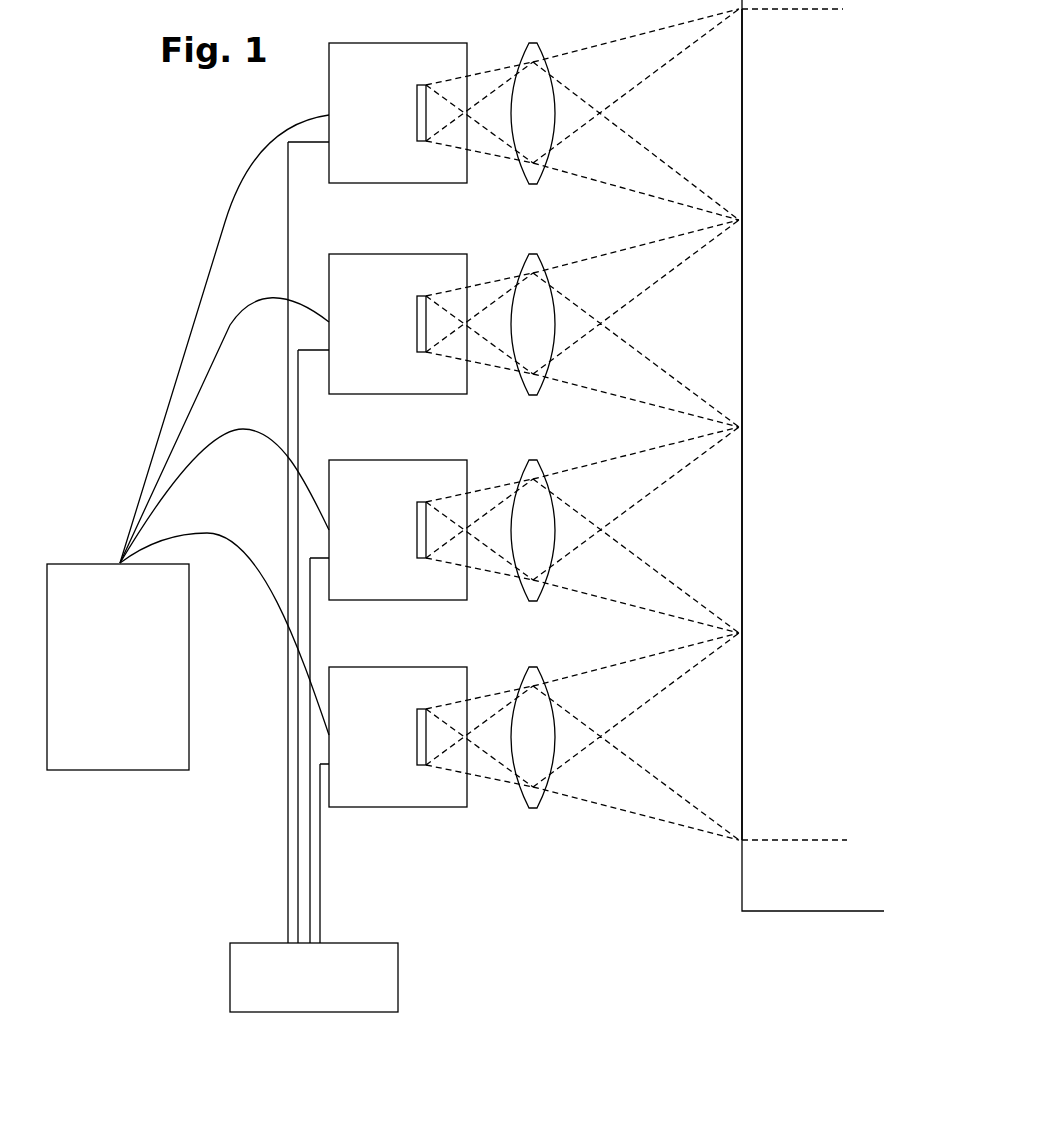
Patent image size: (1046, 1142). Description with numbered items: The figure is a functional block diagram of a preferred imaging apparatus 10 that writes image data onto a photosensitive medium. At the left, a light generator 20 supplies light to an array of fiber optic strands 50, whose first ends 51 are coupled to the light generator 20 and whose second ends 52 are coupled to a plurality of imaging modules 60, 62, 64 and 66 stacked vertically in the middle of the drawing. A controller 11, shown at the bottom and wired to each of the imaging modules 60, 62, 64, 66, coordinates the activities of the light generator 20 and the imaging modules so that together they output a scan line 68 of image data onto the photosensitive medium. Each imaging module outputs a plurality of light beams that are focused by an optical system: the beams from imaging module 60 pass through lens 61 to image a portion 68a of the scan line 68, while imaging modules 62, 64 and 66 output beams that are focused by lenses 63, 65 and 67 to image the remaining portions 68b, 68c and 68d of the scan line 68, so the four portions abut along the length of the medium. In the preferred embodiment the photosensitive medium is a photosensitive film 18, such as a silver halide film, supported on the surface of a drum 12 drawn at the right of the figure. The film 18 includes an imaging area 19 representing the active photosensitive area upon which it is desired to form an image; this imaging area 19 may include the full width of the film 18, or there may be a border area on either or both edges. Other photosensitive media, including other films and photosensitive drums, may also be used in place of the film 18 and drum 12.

The imaging apparatus 10 is at (172, 150).
The controller 11 is at (398, 944).
The drum 12 is at (800, 912).
The photosensitive film 18 is at (742, 877).
The imaging area 19 is at (814, 790).
The light generator 20 is at (56, 770).
The fiber optic strands 50 is at (224, 226).
The first ends 51 is at (120, 563).
The second ends 52 is at (329, 113).
The imaging module 60 is at (329, 184).
The lens 61 is at (533, 185).
The imaging module 62 is at (329, 395).
The lens 63 is at (533, 396).
The imaging module 64 is at (329, 601).
The lens 65 is at (533, 602).
The imaging module 66 is at (329, 808).
The lens 67 is at (533, 809).
The scan line 68 is at (744, 40).
The portion of scan line 68a is at (742, 103).
The portion of scan line 68b is at (742, 313).
The portion of scan line 68c is at (742, 525).
The portion of scan line 68d is at (742, 730).